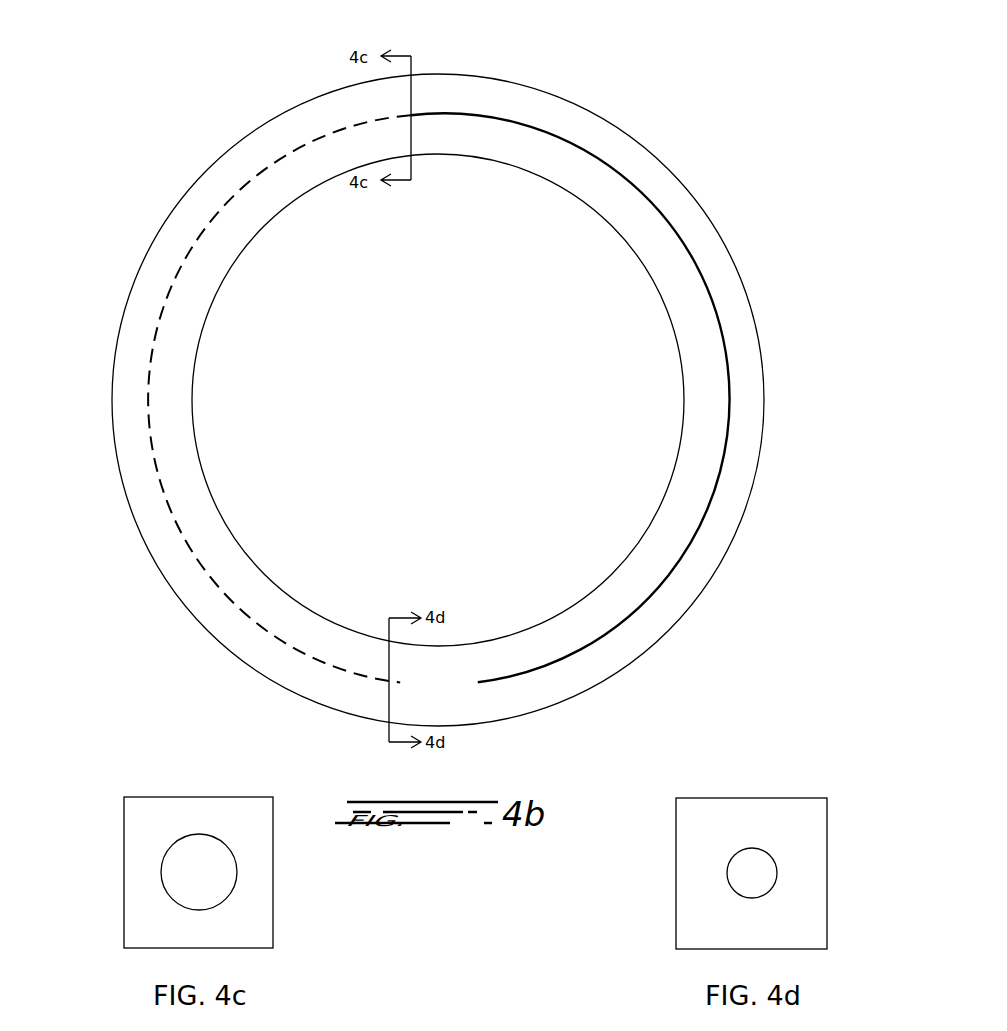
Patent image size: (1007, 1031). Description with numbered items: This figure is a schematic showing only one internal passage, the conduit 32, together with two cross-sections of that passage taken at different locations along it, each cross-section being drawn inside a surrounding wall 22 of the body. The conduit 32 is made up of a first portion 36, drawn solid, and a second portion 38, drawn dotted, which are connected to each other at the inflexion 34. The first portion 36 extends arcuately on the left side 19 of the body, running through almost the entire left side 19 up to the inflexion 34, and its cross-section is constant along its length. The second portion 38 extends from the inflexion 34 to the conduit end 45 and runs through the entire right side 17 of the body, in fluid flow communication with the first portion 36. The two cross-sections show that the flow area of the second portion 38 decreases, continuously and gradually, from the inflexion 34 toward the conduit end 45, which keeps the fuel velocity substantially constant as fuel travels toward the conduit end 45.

In FIG. 4b, the right side 17 is at (170, 588).
In FIG. 4b, the left side 19 is at (642, 657).
In FIG. 4b, the outer casing 22 is at (113, 457).
In FIG. 4c, the outer casing 22 is at (243, 797).
In FIG. 4d, the outer casing 22 is at (752, 798).
In FIG. 4b, the conduit 32 is at (419, 373).
In FIG. 4b, the inflexion 34 is at (436, 114).
In FIG. 4b, the first portion 36 is at (673, 568).
In FIG. 4b, the second portion 38 is at (232, 595).
In FIG. 4c, the second portion 38 is at (161, 864).
In FIG. 4d, the second portion 38 is at (727, 876).
In FIG. 4b, the conduit end 45 is at (400, 682).